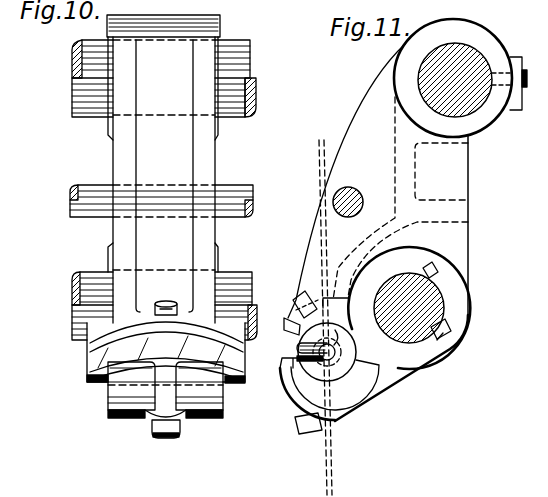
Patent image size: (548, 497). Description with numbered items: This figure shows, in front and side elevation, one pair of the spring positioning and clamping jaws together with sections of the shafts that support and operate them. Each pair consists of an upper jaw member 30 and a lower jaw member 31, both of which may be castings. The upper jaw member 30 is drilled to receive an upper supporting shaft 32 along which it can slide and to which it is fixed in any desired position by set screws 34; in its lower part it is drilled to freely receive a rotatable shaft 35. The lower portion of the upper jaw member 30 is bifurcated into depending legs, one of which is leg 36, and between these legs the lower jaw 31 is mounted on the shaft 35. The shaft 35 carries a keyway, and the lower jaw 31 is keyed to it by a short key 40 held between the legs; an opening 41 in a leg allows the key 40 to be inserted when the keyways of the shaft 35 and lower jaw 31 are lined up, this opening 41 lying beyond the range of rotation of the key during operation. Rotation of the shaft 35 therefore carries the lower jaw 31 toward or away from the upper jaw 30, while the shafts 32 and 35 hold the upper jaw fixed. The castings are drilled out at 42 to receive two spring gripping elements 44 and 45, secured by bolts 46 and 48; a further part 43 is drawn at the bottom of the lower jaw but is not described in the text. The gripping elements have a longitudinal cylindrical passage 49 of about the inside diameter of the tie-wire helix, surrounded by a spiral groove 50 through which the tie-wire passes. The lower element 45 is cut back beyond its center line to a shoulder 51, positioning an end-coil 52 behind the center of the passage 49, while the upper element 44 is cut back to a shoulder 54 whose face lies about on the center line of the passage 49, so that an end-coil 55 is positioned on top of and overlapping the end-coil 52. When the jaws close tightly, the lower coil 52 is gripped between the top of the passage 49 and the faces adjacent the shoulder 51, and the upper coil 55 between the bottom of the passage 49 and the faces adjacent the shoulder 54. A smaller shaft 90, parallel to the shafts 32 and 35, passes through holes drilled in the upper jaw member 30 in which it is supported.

In FIG. 10, the upper jaw member 30 is at (185, 172).
In FIG. 11, the upper jaw member 30 is at (358, 124).
In FIG. 10, the lower jaw member 31 is at (124, 416).
In FIG. 11, the lower jaw member 31 is at (292, 404).
In FIG. 10, the upper supporting shaft 32 is at (243, 69).
In FIG. 11, the upper supporting shaft 32 is at (424, 70).
In FIG. 11, the set screws 34 is at (527, 74).
In FIG. 10, the rotatable shaft 35 is at (240, 276).
In FIG. 11, the rotatable shaft 35 is at (442, 302).
In FIG. 11, the depending leg 36 is at (470, 306).
In FIG. 11, the short key 40 is at (451, 337).
In FIG. 11, the opening 41 is at (436, 272).
In FIG. 11, the drilled opening 42 is at (345, 338).
In FIG. 11, the stop block 43 is at (304, 434).
In FIG. 10, the upper spring gripping element 44 is at (79, 330).
In FIG. 11, the upper spring gripping element 44 is at (353, 353).
In FIG. 10, the lower spring gripping element 45 is at (98, 378).
In FIG. 11, the lower spring gripping element 45 is at (302, 366).
In FIG. 10, the bolt 46 is at (165, 302).
In FIG. 11, the bolt 46 is at (314, 313).
In FIG. 10, the bolt 48 is at (162, 432).
In FIG. 10, the longitudinal cylindrical passage 49 is at (240, 352).
In FIG. 10, the spiral groove 50 is at (88, 351).
In FIG. 11, the spiral groove 50 is at (337, 351).
In FIG. 10, the shoulder 51 is at (243, 369).
In FIG. 11, the shoulder 51 is at (338, 372).
In FIG. 11, the end-coil 52 is at (338, 476).
In FIG. 11, the shoulder 54 is at (333, 330).
In FIG. 11, the end-coil 55 is at (318, 153).
In FIG. 10, the shaft 90 is at (93, 215).
In FIG. 11, the shaft 90 is at (334, 196).